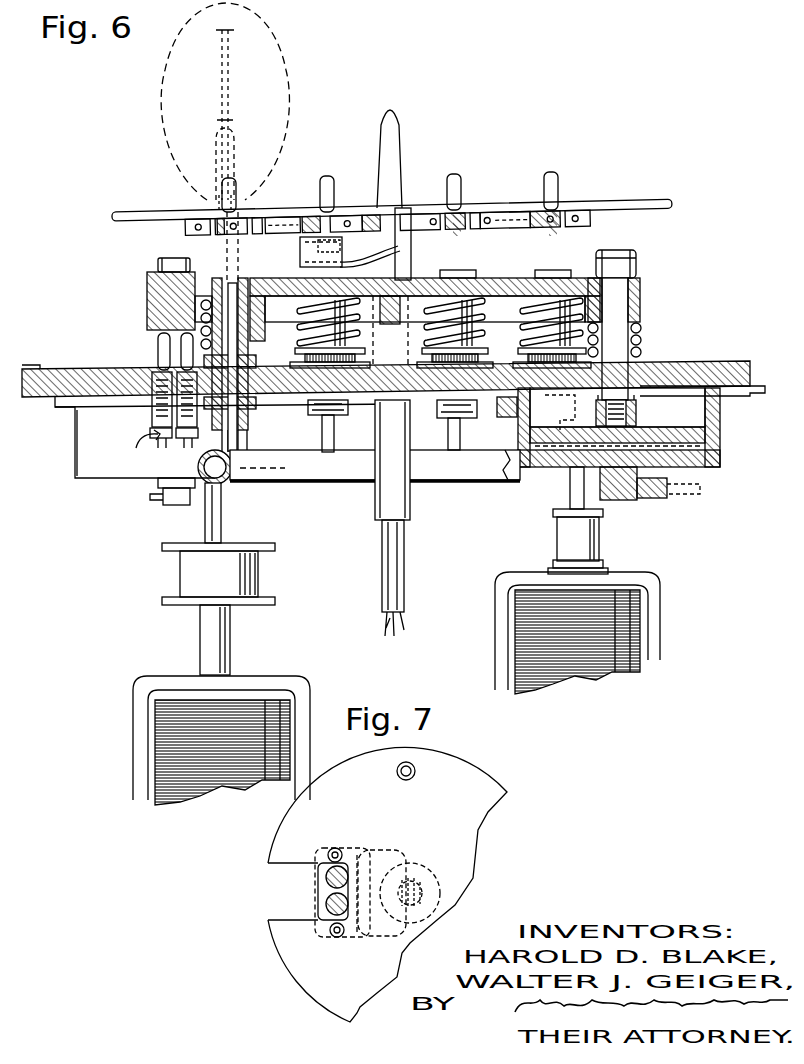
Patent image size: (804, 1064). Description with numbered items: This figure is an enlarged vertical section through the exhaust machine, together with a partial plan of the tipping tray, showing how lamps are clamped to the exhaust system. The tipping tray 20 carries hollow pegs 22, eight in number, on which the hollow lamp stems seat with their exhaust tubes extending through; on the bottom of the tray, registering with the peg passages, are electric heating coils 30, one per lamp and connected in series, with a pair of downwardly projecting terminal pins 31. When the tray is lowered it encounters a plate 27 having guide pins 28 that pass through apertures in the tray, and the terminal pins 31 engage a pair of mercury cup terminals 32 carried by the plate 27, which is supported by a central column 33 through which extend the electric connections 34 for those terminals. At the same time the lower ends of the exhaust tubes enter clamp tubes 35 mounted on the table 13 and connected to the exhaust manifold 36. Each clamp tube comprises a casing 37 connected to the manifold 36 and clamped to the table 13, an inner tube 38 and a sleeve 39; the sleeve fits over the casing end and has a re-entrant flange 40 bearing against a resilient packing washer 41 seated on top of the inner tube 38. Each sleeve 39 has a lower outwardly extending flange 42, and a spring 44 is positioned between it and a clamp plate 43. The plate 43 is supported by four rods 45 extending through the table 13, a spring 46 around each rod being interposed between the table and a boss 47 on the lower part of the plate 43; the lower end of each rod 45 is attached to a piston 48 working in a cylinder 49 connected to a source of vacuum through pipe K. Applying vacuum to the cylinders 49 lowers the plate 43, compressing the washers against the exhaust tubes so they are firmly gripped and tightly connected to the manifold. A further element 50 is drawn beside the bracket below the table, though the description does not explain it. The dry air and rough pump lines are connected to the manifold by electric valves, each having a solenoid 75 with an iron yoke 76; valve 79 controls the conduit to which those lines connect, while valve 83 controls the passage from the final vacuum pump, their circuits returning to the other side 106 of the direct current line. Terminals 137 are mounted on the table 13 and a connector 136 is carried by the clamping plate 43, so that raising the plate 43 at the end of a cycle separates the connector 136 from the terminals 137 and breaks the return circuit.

In FIG. 6, the table 13 is at (738, 360).
In FIG. 6, the tipping tray 20 is at (140, 222).
In FIG. 6, the hollow pegs 22 is at (238, 193).
In FIG. 7, the plate 27 is at (480, 780).
In FIG. 6, the guide pins 28 is at (402, 140).
In FIG. 6, the electric heating coils 30 is at (458, 228).
In FIG. 6, the terminal pins 31 is at (300, 247).
In FIG. 6, the mercury cup terminals 32 is at (336, 250).
In FIG. 7, the mercury cup terminals 32 is at (326, 904).
In FIG. 6, the central column 33 is at (410, 270).
In FIG. 6, the electric connections 34 is at (405, 616).
In FIG. 7, the electric connections 34 is at (365, 928).
In FIG. 6, the clamp tubes 35 is at (465, 270).
In FIG. 6, the exhaust manifold 36 is at (326, 484).
In FIG. 6, the casing 37 is at (247, 440).
In FIG. 6, the inner tube 38 is at (218, 452).
In FIG. 6, the sleeve 39 is at (216, 282).
In FIG. 6, the re-entrant flange 40 is at (234, 282).
In FIG. 6, the resilient packing washer 41 is at (244, 284).
In FIG. 6, the lower outwardly extending flange 42 is at (212, 344).
In FIG. 6, the clamp plate 43 is at (278, 280).
In FIG. 6, the spring 44 is at (212, 308).
In FIG. 6, the rods 45 is at (628, 290).
In FIG. 6, the spring 46 is at (642, 340).
In FIG. 6, the boss 47 is at (640, 320).
In FIG. 6, the piston 48 is at (690, 409).
In FIG. 6, the cylinder 49 is at (75, 458).
In FIG. 6, the terminal 50 is at (150, 498).
In FIG. 6, the solenoid 75 is at (650, 636).
In FIG. 6, the iron yoke 76 is at (662, 600).
In FIG. 6, the electric valve 79 is at (601, 520).
In FIG. 6, the electric valve 83 is at (221, 644).
In FIG. 6, the other side of the direct current line 106 is at (158, 451).
In FIG. 6, the connector 136 is at (147, 326).
In FIG. 6, the terminals 137 is at (180, 352).
In FIG. 6, the pipe K is at (662, 498).